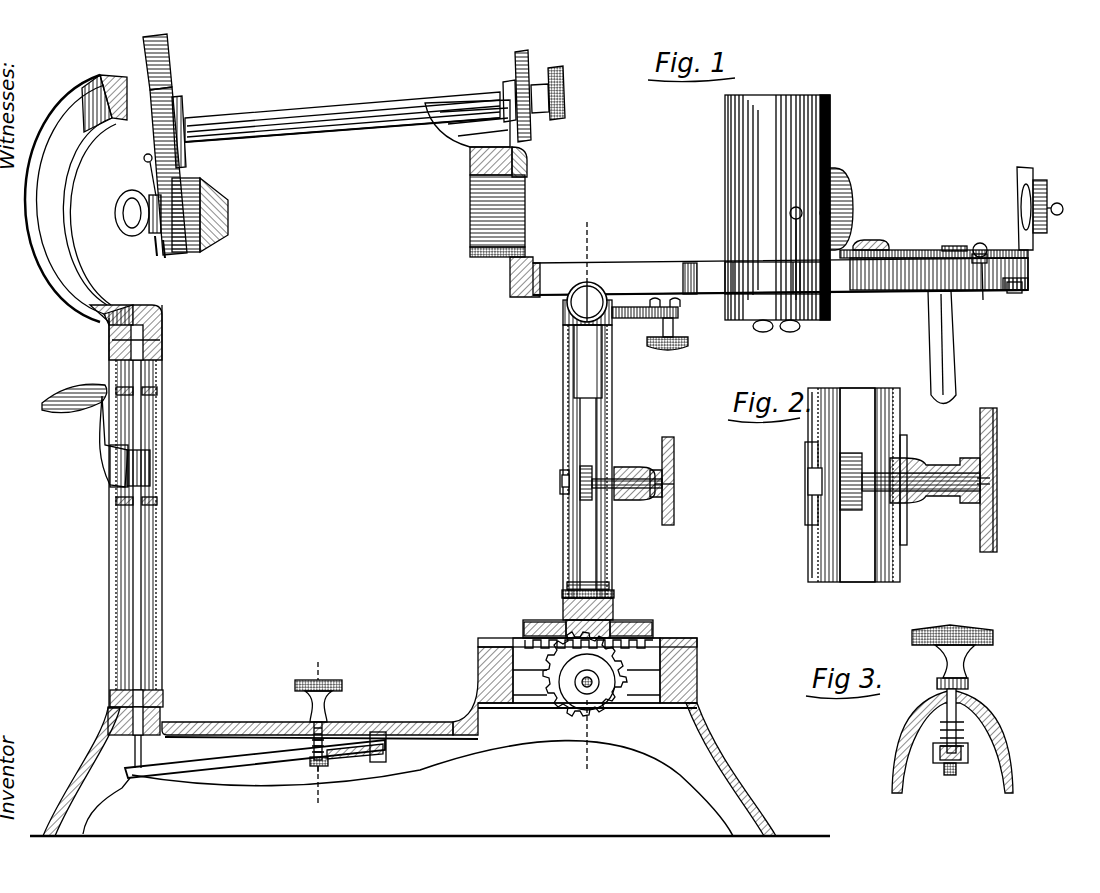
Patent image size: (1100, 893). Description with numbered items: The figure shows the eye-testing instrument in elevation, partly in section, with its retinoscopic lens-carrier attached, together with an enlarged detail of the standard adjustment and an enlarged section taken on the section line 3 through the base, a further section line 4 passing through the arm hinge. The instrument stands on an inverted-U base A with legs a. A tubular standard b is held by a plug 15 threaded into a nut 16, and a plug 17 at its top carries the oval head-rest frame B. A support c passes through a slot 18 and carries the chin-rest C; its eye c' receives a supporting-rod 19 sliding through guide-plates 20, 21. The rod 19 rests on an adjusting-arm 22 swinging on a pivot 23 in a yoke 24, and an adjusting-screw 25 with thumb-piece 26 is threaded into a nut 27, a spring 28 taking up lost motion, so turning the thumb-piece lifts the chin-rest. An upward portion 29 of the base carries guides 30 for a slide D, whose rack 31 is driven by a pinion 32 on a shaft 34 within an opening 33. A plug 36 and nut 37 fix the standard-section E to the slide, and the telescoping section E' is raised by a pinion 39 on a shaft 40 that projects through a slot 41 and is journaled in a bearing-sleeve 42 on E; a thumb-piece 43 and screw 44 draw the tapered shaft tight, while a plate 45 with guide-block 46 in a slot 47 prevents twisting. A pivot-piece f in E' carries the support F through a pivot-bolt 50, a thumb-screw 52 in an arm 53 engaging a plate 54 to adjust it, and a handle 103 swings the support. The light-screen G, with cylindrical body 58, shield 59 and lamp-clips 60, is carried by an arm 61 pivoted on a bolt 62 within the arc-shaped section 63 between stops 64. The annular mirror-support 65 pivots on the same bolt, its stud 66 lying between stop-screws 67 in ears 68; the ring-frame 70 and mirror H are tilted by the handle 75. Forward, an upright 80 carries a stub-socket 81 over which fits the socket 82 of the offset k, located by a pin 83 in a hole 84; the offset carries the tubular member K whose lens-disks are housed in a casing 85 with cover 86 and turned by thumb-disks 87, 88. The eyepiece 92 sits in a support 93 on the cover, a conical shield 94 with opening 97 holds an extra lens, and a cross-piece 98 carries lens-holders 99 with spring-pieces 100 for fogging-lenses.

In FIG. 1, the plug 15 is at (110, 697).
In FIG. 1, the nut 16 is at (105, 733).
In FIG. 1, the plug 17 is at (164, 345).
In FIG. 1, the vertical slot 18 is at (112, 488).
In FIG. 1, the supporting-rod 19 is at (142, 580).
In FIG. 1, the horizontal guide-plate 20 is at (160, 500).
In FIG. 1, the horizontal guide-plate 21 is at (160, 385).
In FIG. 1, the adjusting-arm 22 is at (186, 774).
In FIG. 3, the adjusting-arm 22 is at (940, 756).
In FIG. 1, the pivot 23 is at (384, 747).
In FIG. 1, the yoke 24 is at (380, 762).
In FIG. 1, the adjusting-screw 25 is at (340, 722).
In FIG. 3, the adjusting-screw 25 is at (969, 692).
In FIG. 1, the thumb-piece 26 is at (343, 685).
In FIG. 3, the thumb-piece 26 is at (972, 658).
In FIG. 1, the nut 27 is at (328, 763).
In FIG. 3, the nut 27 is at (962, 777).
In FIG. 1, the spring 28 is at (312, 752).
In FIG. 3, the spring 28 is at (965, 734).
In FIG. 1, the upwardly-extended portion 29 is at (697, 660).
In FIG. 1, the longitudinal guides 30 is at (672, 642).
In FIG. 1, the rack 31 is at (520, 640).
In FIG. 1, the pinion 32 is at (604, 702).
In FIG. 1, the opening 33 is at (660, 676).
In FIG. 1, the shaft 34 is at (582, 688).
In FIG. 1, the plug 36 is at (614, 590).
In FIG. 1, the nut 37 is at (552, 620).
In FIG. 1, the pinion 39 is at (580, 470).
In FIG. 2, the pinion 39 is at (845, 490).
In FIG. 1, the shaft 40 is at (620, 478).
In FIG. 2, the shaft 40 is at (900, 498).
In FIG. 2, the longitudinal slot 41 is at (902, 564).
In FIG. 1, the bearing-sleeve 42 is at (636, 500).
In FIG. 2, the bearing-sleeve 42 is at (918, 462).
In FIG. 1, the thumb-piece 43 is at (675, 448).
In FIG. 2, the thumb-piece 43 is at (998, 432).
In FIG. 1, the screw 44 is at (675, 484).
In FIG. 2, the screw 44 is at (992, 481).
In FIG. 1, the plate 45 is at (560, 480).
In FIG. 2, the plate 45 is at (805, 458).
In FIG. 1, the square guide-block 46 is at (562, 486).
In FIG. 2, the square guide-block 46 is at (808, 480).
In FIG. 2, the vertical slot 47 is at (810, 568).
In FIG. 1, the headed pivot-bolt 50 is at (572, 304).
In FIG. 1, the adjusting thumb-screw 52 is at (690, 342).
In FIG. 1, the rearwardly-projecting horizontal arm 53 is at (640, 318).
In FIG. 1, the plate 54 is at (680, 300).
In FIG. 1, the cylindrical body 58 is at (831, 112).
In FIG. 1, the tubular shield 59 is at (846, 176).
In FIG. 1, the spring-clips 60 is at (790, 332).
In FIG. 1, the arm 61 is at (910, 257).
In FIG. 1, the bolt 62 is at (1016, 292).
In FIG. 1, the looped or arc-shaped section 63 is at (777, 278).
In FIG. 1, the stops 64 is at (864, 244).
In FIG. 1, the annular mirror-support 65 is at (1018, 172).
In FIG. 1, the laterally-projecting stud or arm 66 is at (958, 246).
In FIG. 1, the stop-screws 67 is at (983, 245).
In FIG. 1, the upright ears 68 is at (983, 300).
In FIG. 1, the socket or ring-frame 70 is at (1048, 194).
In FIG. 1, the handle 75 is at (1063, 212).
In FIG. 1, the transverse annular upright 80 is at (532, 262).
In FIG. 1, the horizontal tubular stub-socket 81 is at (470, 225).
In FIG. 1, the companion stub-socket 82 is at (488, 258).
In FIG. 1, the pin or stud 83 is at (528, 162).
In FIG. 1, the hole 84 is at (470, 168).
In FIG. 1, the casing 85 is at (172, 66).
In FIG. 1, the removable front side or cover 86 is at (155, 128).
In FIG. 1, the thumb-piece or disk 87 is at (565, 80).
In FIG. 1, the thumb-disk 88 is at (516, 66).
In FIG. 1, the eyepiece 92 is at (122, 230).
In FIG. 1, the tubular support 93 is at (148, 236).
In FIG. 1, the conical shield 94 is at (215, 198).
In FIG. 1, the opening 97 is at (190, 250).
In FIG. 1, the cross-piece 98 is at (144, 158).
In FIG. 1, the lens-holders 99 is at (155, 258).
In FIG. 1, the circular spring-pieces 100 is at (165, 258).
In FIG. 1, the handle 103 is at (958, 350).
In FIG. 1, the section line 3 is at (315, 733).
In FIG. 1, the section line 4 is at (585, 496).
In FIG. 1, the base A is at (228, 720).
In FIG. 3, the base A is at (990, 720).
In FIG. 1, the open oval frame B is at (50, 248).
In FIG. 1, the chin-rest C is at (52, 410).
In FIG. 1, the angular-shaped plate or support c is at (96, 441).
In FIG. 1, the eye c' is at (158, 466).
In FIG. 1, the tubular standard b is at (164, 534).
In FIG. 1, the slide D is at (625, 620).
In FIG. 1, the upright tubular standard-section E is at (566, 461).
In FIG. 2, the upright tubular standard-section E is at (838, 485).
In FIG. 1, the second tubular section E' is at (559, 361).
In FIG. 2, the second tubular section E' is at (817, 485).
In FIG. 1, the supporting-arm F is at (650, 266).
In FIG. 1, the light-screen G is at (760, 207).
In FIG. 1, the silvered mirror H is at (1020, 200).
In FIG. 1, the tubular member K is at (340, 108).
In FIG. 1, the offset or abutment k is at (440, 138).
In FIG. 1, the end supports or legs a is at (102, 810).
In FIG. 1, the pivot-piece f is at (580, 384).